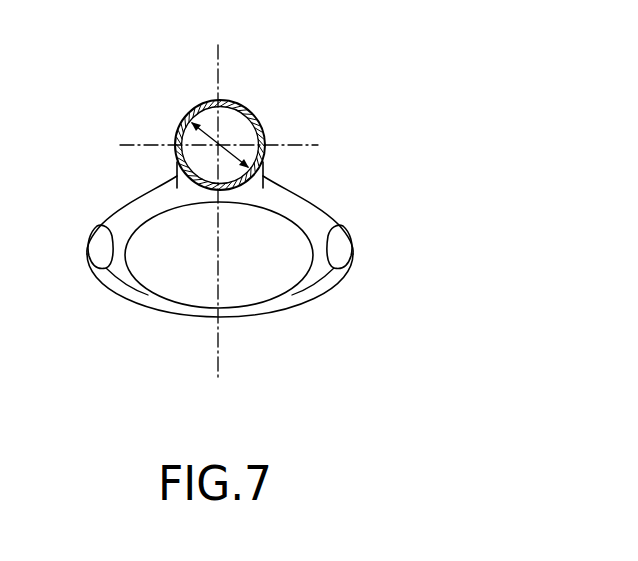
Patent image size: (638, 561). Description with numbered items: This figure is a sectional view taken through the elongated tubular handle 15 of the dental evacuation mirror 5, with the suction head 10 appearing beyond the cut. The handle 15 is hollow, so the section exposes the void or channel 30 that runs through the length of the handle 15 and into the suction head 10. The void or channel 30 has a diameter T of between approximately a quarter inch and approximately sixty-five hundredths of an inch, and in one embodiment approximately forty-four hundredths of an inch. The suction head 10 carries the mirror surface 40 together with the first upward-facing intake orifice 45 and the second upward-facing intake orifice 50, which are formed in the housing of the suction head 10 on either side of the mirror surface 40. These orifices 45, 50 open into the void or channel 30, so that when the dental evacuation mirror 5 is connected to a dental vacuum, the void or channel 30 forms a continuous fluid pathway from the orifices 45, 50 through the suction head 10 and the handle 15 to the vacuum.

The dental evacuation mirror 5 is at (334, 42).
The suction head 10 is at (372, 192).
The elongated tubular handle 15 is at (257, 114).
The void or channel 30 is at (232, 123).
The diameter T is at (210, 133).
The mirror surface 40 is at (176, 272).
The first upward-facing intake orifice 45 is at (343, 262).
The second upward-facing intake orifice 50 is at (104, 262).